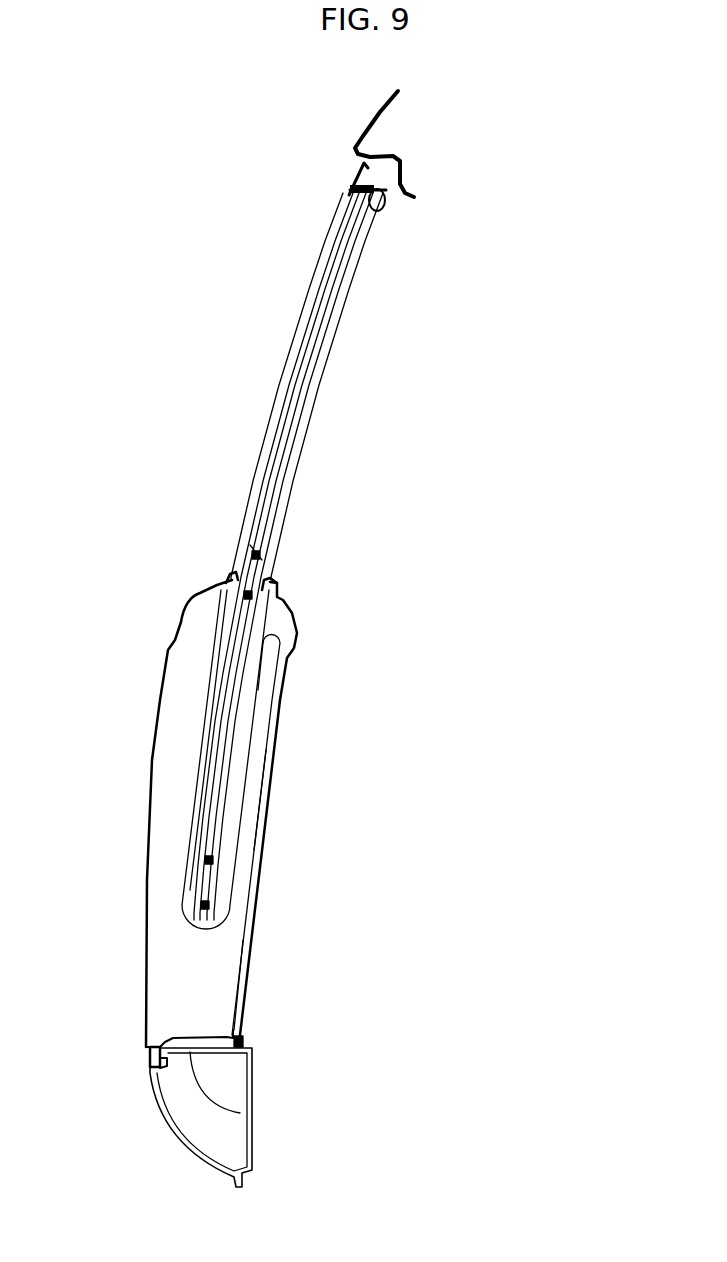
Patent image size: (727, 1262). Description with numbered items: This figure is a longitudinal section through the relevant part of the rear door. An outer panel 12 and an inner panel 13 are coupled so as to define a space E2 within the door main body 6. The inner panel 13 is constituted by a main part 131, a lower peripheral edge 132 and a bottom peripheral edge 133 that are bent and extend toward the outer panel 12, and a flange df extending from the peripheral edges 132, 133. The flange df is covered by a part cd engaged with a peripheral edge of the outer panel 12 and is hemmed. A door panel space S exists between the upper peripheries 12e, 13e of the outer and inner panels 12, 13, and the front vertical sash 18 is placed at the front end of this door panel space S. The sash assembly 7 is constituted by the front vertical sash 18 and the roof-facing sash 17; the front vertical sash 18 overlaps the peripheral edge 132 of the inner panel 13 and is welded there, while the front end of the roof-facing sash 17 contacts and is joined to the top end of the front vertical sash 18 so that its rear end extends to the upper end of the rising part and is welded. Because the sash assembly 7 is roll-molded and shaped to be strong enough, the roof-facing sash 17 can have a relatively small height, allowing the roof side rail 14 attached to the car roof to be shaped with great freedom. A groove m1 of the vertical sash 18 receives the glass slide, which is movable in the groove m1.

The roof side rail 14 is at (358, 136).
The sash assembly 7 is at (296, 298).
The roof-facing sash 17 is at (385, 207).
The groove m1 is at (301, 386).
The front vertical sash 18 is at (297, 473).
The door panel space S is at (258, 552).
The upper periphery of outer panel 12e is at (233, 572).
The upper periphery of inner panel 13e is at (277, 581).
The door main body 6 is at (216, 850).
The outer panel 12 is at (136, 798).
The inner panel 13 is at (285, 771).
The main part 131 is at (250, 922).
The lower peripheral edge 132 is at (203, 983).
The space E2 is at (175, 968).
The flange df is at (147, 1037).
The part cd is at (150, 1070).
The bottom peripheral edge 133 is at (240, 1113).